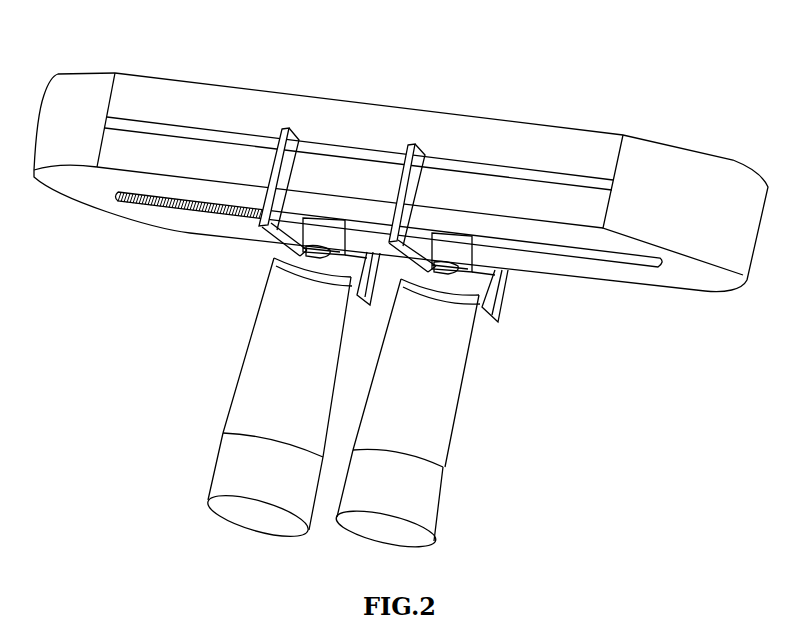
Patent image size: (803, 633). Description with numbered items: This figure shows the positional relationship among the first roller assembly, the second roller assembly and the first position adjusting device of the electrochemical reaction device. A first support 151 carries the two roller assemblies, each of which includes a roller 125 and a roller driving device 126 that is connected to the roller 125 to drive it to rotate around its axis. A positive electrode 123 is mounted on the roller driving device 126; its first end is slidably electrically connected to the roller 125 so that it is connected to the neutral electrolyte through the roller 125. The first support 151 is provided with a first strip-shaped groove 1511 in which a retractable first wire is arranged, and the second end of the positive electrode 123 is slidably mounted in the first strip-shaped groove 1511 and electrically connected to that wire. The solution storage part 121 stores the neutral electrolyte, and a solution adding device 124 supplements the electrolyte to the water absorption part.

The first support 151 is at (220, 82).
The first strip-shaped groove 1511 is at (345, 150).
The positive electrode 123 is at (258, 230).
The roller driving device 126 is at (458, 245).
The roller 125 is at (508, 293).
The solution storage part 121 is at (472, 362).
The solution adding device 124 is at (448, 493).